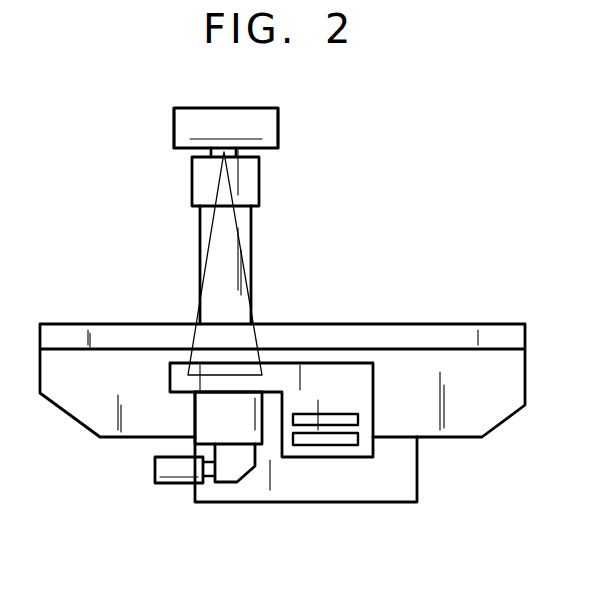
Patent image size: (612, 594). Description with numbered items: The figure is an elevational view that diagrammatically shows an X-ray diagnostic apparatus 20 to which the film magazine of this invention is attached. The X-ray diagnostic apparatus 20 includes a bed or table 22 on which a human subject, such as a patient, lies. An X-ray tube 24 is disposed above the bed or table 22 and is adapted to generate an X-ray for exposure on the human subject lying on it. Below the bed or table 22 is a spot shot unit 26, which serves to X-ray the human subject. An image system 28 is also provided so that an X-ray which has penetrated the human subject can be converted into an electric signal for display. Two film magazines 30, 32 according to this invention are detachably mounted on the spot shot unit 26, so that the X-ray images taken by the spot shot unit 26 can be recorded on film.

The X-ray diagnostic apparatus 20 is at (287, 227).
The bed or table 22 is at (490, 323).
The X-ray tube 24 is at (280, 134).
The spot shot unit 26 is at (313, 423).
The image system 28 is at (250, 470).
The film magazine 30 is at (358, 419).
The film magazine 32 is at (360, 440).